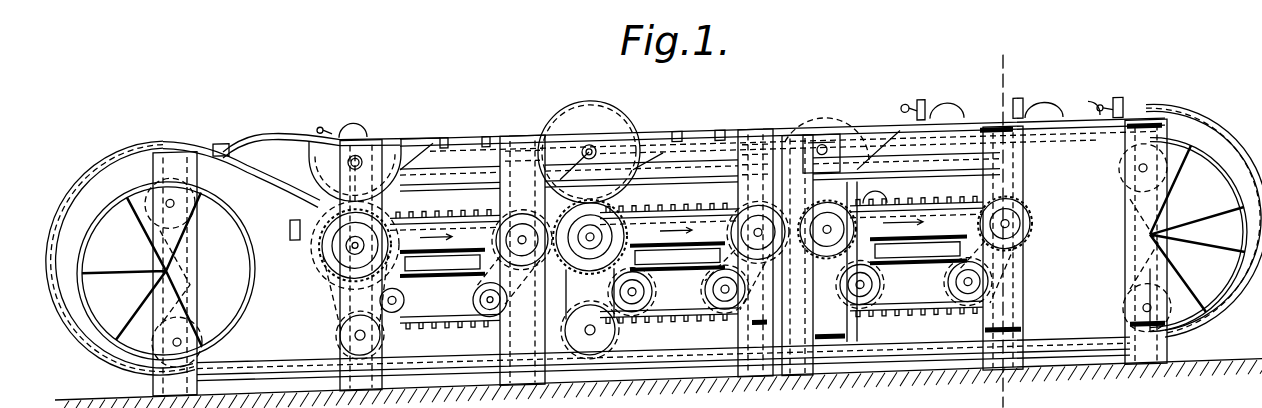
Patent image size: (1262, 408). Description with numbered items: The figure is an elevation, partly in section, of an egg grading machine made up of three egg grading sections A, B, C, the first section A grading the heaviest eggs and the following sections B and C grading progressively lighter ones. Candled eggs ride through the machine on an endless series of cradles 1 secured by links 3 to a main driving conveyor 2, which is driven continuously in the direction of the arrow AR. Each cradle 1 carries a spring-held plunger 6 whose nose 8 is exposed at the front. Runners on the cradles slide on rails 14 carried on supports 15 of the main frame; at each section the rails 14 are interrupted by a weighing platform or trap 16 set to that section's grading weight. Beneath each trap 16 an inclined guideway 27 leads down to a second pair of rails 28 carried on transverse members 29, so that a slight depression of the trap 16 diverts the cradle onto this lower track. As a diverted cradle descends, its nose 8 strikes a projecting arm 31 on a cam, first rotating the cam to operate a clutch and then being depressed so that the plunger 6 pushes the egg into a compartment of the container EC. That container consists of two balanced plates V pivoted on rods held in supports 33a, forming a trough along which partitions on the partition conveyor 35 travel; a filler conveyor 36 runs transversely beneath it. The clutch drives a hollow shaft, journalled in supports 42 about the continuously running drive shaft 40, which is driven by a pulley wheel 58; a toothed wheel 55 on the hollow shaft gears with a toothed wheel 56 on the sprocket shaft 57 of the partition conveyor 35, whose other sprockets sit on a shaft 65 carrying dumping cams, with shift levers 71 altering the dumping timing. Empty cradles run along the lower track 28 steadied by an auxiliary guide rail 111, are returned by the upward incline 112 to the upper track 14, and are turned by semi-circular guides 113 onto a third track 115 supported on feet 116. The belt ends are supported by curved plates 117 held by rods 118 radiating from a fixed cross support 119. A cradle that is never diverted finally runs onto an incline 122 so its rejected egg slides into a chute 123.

The cradle 1 is at (368, 150).
The main driving conveyor 2 is at (1105, 178).
The links 3 is at (1045, 177).
The plunger 6 is at (318, 137).
The nose 8 is at (1089, 102).
The rails 14 is at (220, 154).
The supports 15 is at (525, 162).
The weighing platform or trap 16 is at (480, 153).
The inclined guideway 27 is at (425, 191).
The second pair of rails 28 is at (493, 196).
The transverse members 29 is at (1020, 233).
The projecting arm 31 is at (838, 153).
The supports 33a is at (960, 344).
The partition conveyor 35 is at (465, 348).
The filler conveyor 36 is at (462, 293).
The drive shaft 40 is at (600, 164).
The supports 42 is at (825, 167).
The toothed wheel 55 is at (574, 128).
The toothed wheel 56 is at (340, 259).
The sprocket shaft 57 is at (350, 272).
The pulley wheel 58 is at (605, 135).
The shaft 65 is at (530, 285).
The shift levers 71 is at (768, 343).
The auxiliary guide rail 111 is at (718, 172).
The upward incline of lower track 112 is at (255, 190).
The outer semi-circular guide 113 is at (130, 317).
The third track 115 is at (945, 374).
The feet 116 is at (600, 388).
The curved plates 117 is at (85, 254).
The rods 118 is at (1245, 269).
The fixed cross support 119 is at (198, 283).
The incline 122 is at (285, 137).
The chute 123 is at (292, 238).
The egg grading section A is at (883, 116).
The egg grading section B is at (681, 120).
The egg grading section C is at (428, 125).
The arrow AR is at (858, 101).
The container EC is at (688, 237).
The plates V is at (1006, 94).